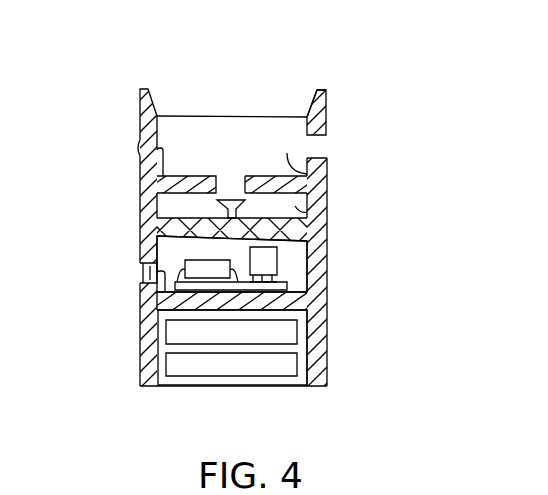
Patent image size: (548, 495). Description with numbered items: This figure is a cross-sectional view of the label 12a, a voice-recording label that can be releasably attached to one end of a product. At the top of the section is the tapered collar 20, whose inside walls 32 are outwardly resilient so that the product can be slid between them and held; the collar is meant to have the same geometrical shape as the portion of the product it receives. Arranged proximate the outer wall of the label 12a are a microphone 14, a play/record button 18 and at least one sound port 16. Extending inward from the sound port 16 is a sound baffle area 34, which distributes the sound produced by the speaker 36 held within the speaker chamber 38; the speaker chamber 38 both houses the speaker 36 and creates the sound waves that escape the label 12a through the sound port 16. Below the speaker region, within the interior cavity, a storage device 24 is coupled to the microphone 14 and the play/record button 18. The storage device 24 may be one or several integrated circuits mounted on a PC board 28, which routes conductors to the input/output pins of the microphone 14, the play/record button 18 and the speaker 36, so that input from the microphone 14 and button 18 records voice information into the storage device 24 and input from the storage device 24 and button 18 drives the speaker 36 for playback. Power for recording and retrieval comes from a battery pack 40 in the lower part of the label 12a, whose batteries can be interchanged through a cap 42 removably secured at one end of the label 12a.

The label 12a is at (77, 163).
The microphone 14 is at (140, 145).
The sound port 16 is at (316, 145).
The play/record button 18 is at (140, 271).
The tapered collar 20 is at (238, 107).
The storage device 24 is at (193, 259).
The PC board 28 is at (258, 276).
The inside walls 32 is at (312, 100).
The sound baffle area 34 is at (307, 182).
The speaker 36 is at (307, 247).
The speaker chamber 38 is at (307, 219).
The battery pack 40 is at (277, 368).
The cap 42 is at (192, 387).